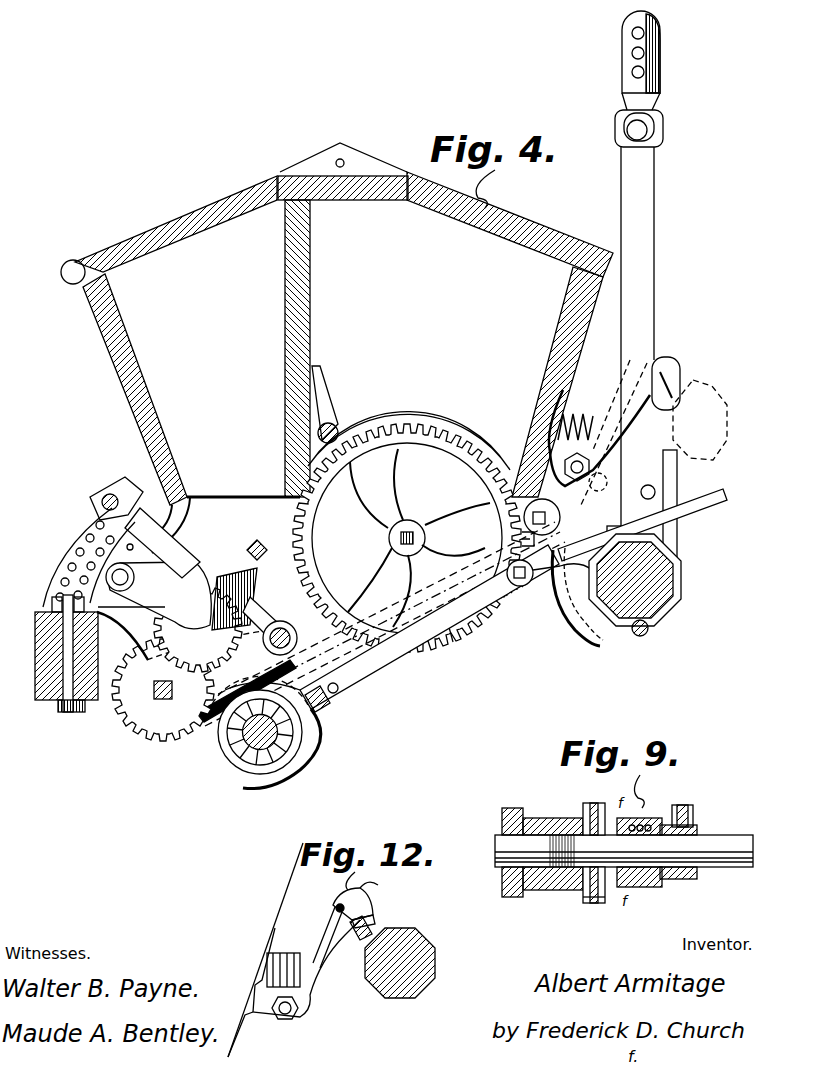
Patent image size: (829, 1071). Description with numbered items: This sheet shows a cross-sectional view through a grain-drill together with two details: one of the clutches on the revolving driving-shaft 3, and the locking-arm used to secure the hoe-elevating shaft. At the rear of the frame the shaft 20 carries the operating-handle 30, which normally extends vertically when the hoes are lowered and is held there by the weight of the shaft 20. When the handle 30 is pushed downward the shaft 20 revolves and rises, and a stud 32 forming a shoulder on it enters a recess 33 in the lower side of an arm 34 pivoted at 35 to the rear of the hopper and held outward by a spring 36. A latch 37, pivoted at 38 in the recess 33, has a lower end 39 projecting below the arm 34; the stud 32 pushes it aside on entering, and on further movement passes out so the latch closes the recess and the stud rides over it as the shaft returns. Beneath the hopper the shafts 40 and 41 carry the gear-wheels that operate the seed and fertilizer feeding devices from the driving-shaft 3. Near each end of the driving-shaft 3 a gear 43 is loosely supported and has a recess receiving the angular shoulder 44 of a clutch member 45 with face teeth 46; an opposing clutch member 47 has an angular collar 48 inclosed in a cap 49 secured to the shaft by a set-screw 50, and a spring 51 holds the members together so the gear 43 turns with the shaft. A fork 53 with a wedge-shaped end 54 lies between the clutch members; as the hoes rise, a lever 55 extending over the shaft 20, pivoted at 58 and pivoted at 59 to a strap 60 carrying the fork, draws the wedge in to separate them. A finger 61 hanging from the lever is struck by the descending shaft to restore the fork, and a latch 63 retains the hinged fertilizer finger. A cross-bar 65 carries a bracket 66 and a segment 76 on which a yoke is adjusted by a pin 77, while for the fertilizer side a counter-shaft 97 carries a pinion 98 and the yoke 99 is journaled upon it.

In FIG. 4, the driving-shaft 3 is at (260, 732).
In FIG. 9, the driving-shaft 3 is at (624, 851).
In FIG. 4, the shaft 20 is at (727, 438).
In FIG. 12, the shaft 20 is at (420, 950).
In FIG. 4, the operating-handle 30 is at (637, 278).
In FIG. 4, the stud 32 is at (645, 632).
In FIG. 12, the stud 32 is at (354, 946).
In FIG. 12, the recess 33 is at (372, 918).
In FIG. 12, the arm 34 is at (328, 935).
In FIG. 12, the pivot 35 is at (290, 1020).
In FIG. 12, the spring 36 is at (285, 960).
In FIG. 12, the latch 37 is at (362, 896).
In FIG. 12, the pivot 38 is at (338, 905).
In FIG. 12, the lower end 39 is at (380, 905).
In FIG. 4, the shaft 40 is at (264, 538).
In FIG. 4, the shaft 41 is at (402, 546).
In FIG. 9, the gear 43 is at (515, 800).
In FIG. 9, the angular shoulder 44 is at (515, 890).
In FIG. 4, the clutch member 45 is at (212, 745).
In FIG. 9, the clutch member 45 is at (590, 812).
In FIG. 4, the teeth 46 is at (225, 768).
In FIG. 9, the teeth 46 is at (588, 882).
In FIG. 9, the clutch member 47 is at (610, 880).
In FIG. 9, the angular collar 48 is at (655, 882).
In FIG. 9, the cap 49 is at (690, 878).
In FIG. 9, the set-screw 50 is at (695, 812).
In FIG. 9, the spring 51 is at (652, 822).
In FIG. 4, the fork 53 is at (322, 727).
In FIG. 9, the fork 53 is at (595, 900).
In FIG. 4, the wedge-shaped end 54 is at (243, 790).
In FIG. 4, the lever 55 is at (700, 512).
In FIG. 4, the pivot 58 is at (524, 518).
In FIG. 4, the pivot 59 is at (520, 587).
In FIG. 4, the strap 60 is at (380, 624).
In FIG. 4, the finger 61 is at (565, 600).
In FIG. 4, the latch 63 is at (635, 580).
In FIG. 4, the bar 65 is at (100, 653).
In FIG. 4, the bracket 66 is at (492, 540).
In FIG. 4, the segment 76 is at (80, 598).
In FIG. 4, the pin 77 is at (92, 500).
In FIG. 4, the counter-shaft 97 is at (293, 648).
In FIG. 4, the pinion 98 is at (227, 620).
In FIG. 4, the yoke 99 is at (191, 598).